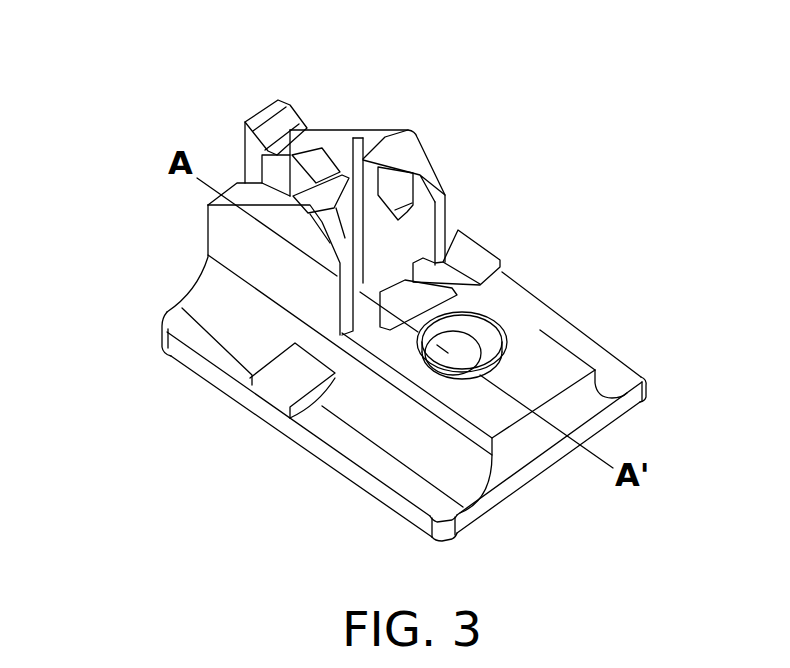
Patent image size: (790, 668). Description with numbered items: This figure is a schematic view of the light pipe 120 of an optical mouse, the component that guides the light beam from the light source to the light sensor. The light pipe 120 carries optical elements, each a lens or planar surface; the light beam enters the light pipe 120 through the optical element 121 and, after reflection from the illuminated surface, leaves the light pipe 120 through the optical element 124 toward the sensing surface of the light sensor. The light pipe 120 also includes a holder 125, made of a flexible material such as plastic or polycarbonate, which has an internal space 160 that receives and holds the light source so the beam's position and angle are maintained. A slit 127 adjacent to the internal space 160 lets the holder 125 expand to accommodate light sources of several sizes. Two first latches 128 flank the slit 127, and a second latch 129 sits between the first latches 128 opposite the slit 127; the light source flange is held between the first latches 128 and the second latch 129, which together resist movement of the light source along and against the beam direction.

The light pipe 120 is at (652, 45).
The optical element 121 is at (483, 287).
The optical element 124 is at (468, 354).
The holder 125 is at (292, 268).
The slit 127 is at (420, 175).
The first latch 128 is at (280, 192).
The second latch 129 is at (262, 118).
The internal space 160 is at (348, 150).